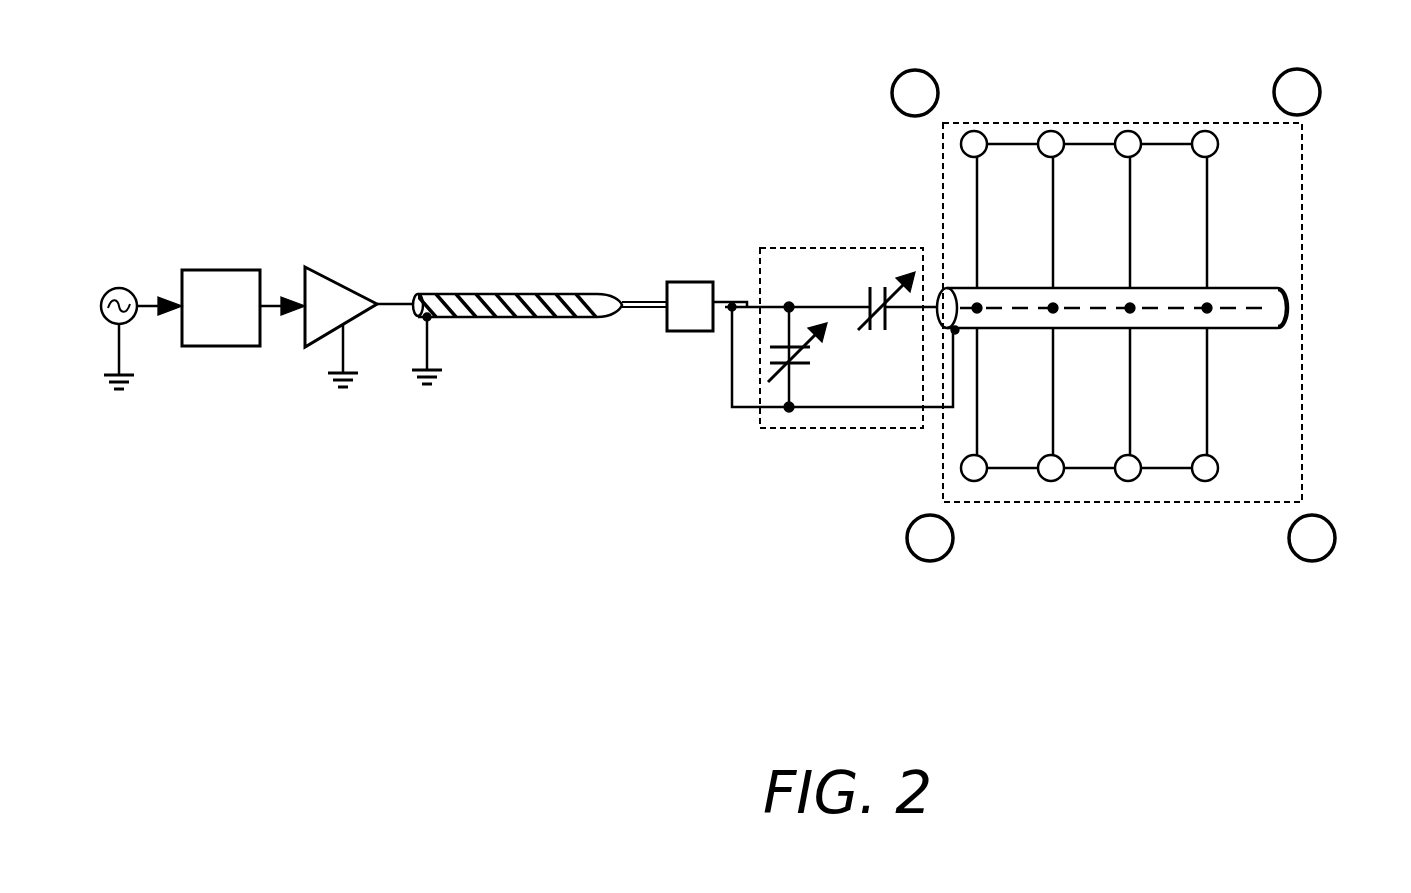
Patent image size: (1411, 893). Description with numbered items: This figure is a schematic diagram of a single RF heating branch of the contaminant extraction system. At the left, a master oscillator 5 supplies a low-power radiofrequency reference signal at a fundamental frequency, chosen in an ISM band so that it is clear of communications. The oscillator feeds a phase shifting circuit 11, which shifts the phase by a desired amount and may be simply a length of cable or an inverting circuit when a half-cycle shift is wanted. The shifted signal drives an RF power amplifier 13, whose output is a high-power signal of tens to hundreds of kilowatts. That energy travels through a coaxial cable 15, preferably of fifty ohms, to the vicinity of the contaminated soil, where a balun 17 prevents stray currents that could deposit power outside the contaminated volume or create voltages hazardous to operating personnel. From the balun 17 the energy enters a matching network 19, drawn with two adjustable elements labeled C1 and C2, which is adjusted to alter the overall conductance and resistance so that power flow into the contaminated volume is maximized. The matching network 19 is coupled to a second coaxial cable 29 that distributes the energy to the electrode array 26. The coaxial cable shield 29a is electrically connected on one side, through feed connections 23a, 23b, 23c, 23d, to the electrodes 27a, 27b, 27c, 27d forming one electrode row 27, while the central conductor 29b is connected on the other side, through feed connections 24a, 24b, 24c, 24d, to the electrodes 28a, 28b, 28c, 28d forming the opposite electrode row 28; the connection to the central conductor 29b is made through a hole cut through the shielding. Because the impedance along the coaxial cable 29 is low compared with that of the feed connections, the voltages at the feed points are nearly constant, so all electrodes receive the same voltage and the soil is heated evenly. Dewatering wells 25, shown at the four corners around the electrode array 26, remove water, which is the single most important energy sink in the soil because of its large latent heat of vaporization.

The master oscillator 5 is at (113, 288).
The phase shifting circuit 11 is at (216, 270).
The RF power amplifier 13 is at (346, 284).
The coaxial cable 15 is at (456, 294).
The balanced/unbalanced compensation unit (balun) 17 is at (690, 282).
The matching network 19 is at (848, 312).
The variable capacitor C1 is at (808, 357).
The variable capacitor C2 is at (863, 325).
The feed connection 23a is at (977, 232).
The feed connection 23b is at (1053, 232).
The feed connection 23c is at (1130, 232).
The feed connection 23d is at (1207, 228).
The feed connection 24a is at (977, 348).
The feed connection 24b is at (1053, 348).
The feed connection 24c is at (1130, 348).
The feed connection 24d is at (1207, 348).
The dewatering well 25 is at (908, 70).
The electrode array 26 is at (1018, 123).
The electrode row 27 is at (1215, 153).
The electrode 27a is at (984, 157).
The electrode 27b is at (1061, 157).
The electrode 27c is at (1138, 157).
The electrode 27d is at (1195, 133).
The electrode row 28 is at (1216, 475).
The electrode 28a is at (984, 456).
The electrode 28b is at (1061, 456).
The electrode 28c is at (1138, 456).
The electrode 28d is at (1211, 481).
The coaxial cable 29 is at (1166, 316).
The coaxial cable shield 29a is at (1286, 326).
The central conductor 29b is at (1190, 306).